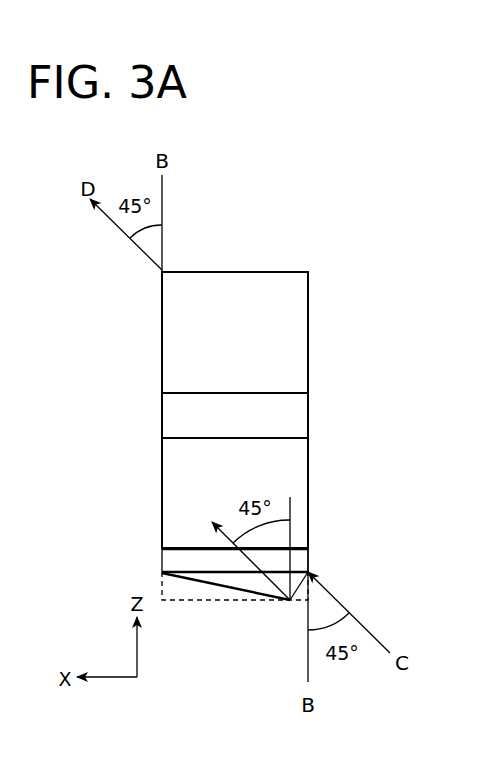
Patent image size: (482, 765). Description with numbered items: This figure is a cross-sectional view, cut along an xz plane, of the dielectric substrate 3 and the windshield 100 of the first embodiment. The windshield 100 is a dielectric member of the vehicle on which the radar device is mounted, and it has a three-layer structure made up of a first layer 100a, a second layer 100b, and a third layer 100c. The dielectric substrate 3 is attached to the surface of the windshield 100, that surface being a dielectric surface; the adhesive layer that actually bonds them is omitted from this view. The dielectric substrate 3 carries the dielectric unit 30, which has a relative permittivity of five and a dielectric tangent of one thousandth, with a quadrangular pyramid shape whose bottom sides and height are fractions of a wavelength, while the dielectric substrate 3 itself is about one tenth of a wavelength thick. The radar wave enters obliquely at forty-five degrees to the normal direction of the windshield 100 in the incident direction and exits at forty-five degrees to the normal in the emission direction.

The windshield 100 is at (161, 272).
The first layer 100a is at (308, 482).
The second layer 100b is at (308, 417).
The third layer 100c is at (308, 327).
The dielectric substrate 3 is at (340, 565).
The dielectric unit 30 is at (225, 590).